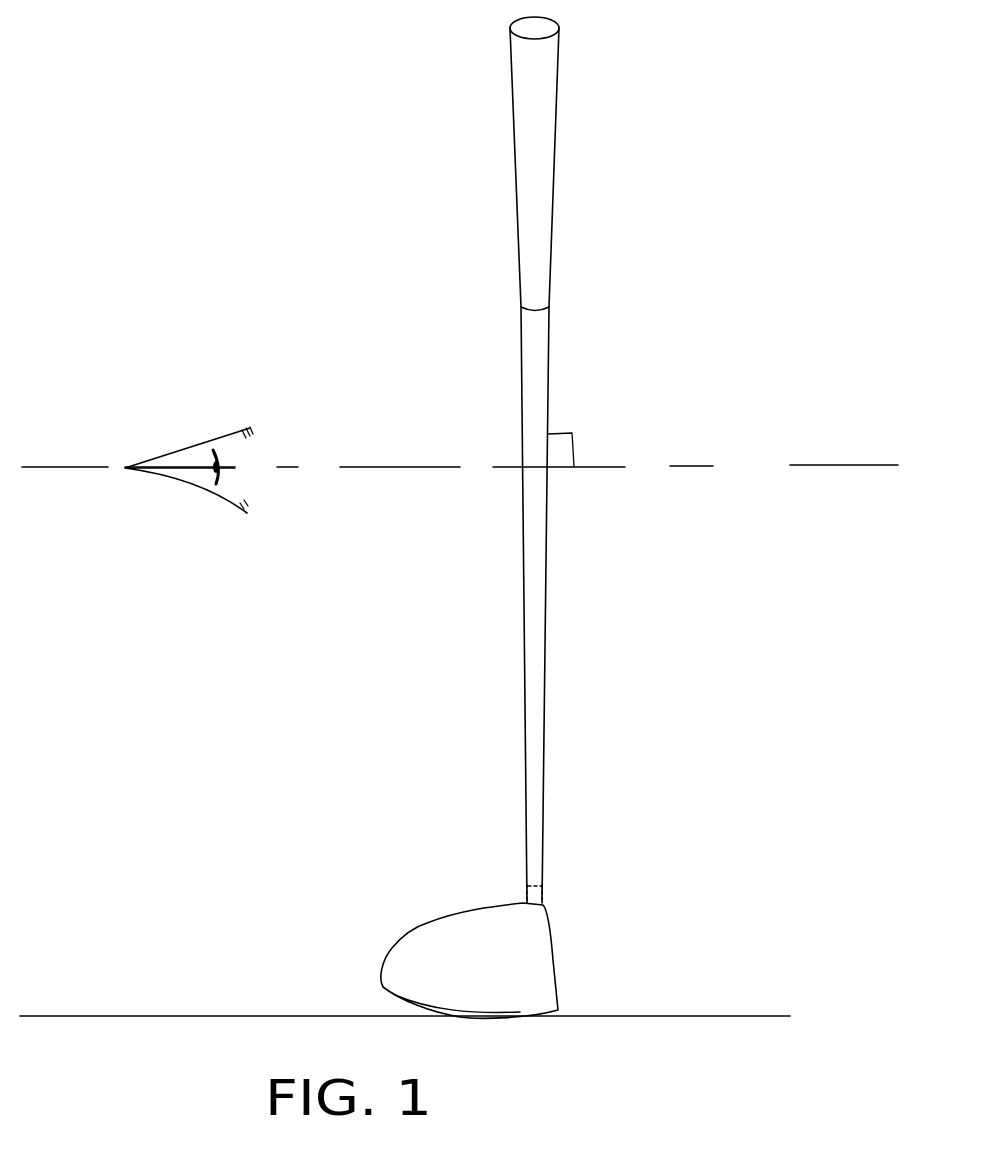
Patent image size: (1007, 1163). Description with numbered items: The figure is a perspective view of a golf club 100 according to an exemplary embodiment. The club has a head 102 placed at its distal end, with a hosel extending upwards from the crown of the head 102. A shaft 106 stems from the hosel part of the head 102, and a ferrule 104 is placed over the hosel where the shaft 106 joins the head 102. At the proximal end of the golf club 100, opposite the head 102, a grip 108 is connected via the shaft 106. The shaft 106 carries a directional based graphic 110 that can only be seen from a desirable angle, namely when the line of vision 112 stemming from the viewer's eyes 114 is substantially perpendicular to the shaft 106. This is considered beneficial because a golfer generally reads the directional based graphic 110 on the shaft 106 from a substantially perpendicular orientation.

The golf club 100 is at (672, 380).
The head 102 is at (392, 948).
The ferrule 104 is at (559, 894).
The shaft 106 is at (527, 633).
The grip 108 is at (515, 168).
The directional based graphic 110 is at (548, 497).
The line of vision 112 is at (385, 467).
The viewer's eyes 114 is at (217, 440).